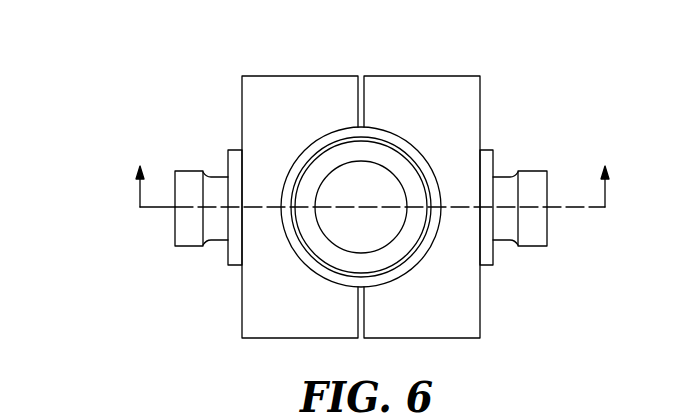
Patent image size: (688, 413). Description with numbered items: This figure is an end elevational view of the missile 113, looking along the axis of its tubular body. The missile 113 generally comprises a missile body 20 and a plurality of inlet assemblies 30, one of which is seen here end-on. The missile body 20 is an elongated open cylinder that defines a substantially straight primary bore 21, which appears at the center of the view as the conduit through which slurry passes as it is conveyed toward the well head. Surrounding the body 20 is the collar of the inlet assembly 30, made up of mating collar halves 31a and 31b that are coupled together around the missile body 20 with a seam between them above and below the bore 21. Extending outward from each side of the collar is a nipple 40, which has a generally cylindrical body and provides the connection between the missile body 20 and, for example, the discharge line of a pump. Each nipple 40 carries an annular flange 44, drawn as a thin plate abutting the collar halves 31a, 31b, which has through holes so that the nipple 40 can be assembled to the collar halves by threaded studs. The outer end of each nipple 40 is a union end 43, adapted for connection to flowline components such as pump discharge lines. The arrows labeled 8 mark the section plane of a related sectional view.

The missile 113 is at (90, 67).
The inlet assembly 30 is at (490, 60).
The collar mating half 31a is at (296, 103).
The collar mating half 31b is at (445, 322).
The missile body 20 is at (383, 155).
The bore 21 is at (333, 235).
The annular flange 44 is at (232, 150).
The nipple 40 is at (172, 238).
The union end 43 is at (183, 247).
The section line 8 is at (368, 186).